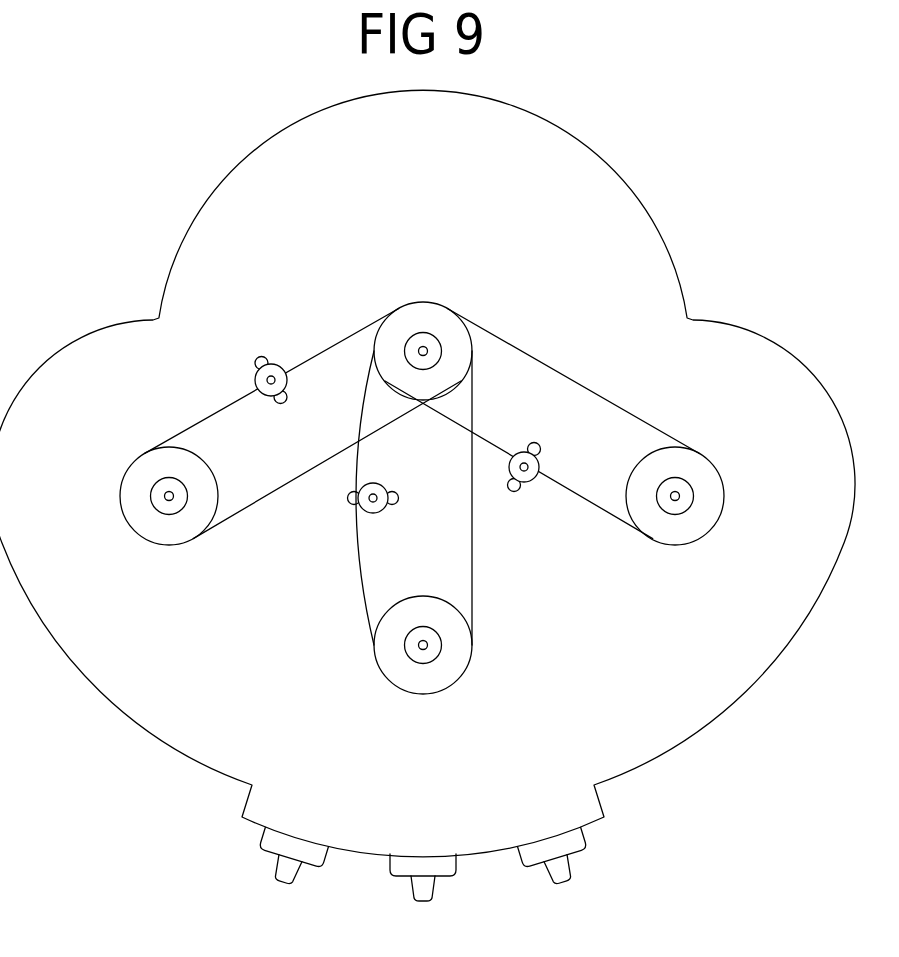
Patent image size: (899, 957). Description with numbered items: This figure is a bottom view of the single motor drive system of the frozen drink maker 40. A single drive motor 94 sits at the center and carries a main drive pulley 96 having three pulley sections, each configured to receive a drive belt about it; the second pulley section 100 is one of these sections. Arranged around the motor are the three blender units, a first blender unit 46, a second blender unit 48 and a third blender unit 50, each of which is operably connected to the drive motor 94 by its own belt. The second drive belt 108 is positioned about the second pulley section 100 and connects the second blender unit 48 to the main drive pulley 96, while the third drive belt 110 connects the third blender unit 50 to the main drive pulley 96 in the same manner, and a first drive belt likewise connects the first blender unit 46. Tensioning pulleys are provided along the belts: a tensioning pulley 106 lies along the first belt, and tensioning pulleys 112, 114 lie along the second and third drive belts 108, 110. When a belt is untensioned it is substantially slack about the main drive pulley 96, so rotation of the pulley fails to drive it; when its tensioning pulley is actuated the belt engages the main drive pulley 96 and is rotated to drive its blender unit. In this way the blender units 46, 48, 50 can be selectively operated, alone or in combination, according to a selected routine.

The frozen drink maker 40 is at (601, 159).
The first blender unit 46 is at (723, 478).
The second blender unit 48 is at (454, 683).
The third blender unit 50 is at (121, 500).
The drive motor 94 is at (438, 302).
The main drive pulley 96 is at (396, 330).
The second pulley section 100 is at (631, 410).
The tensioning pulley 106 is at (528, 482).
The second drive belt 108 is at (472, 575).
The third drive belt 110 is at (175, 436).
The tensioning pulley 112 is at (371, 507).
The tensioning pulley 114 is at (254, 384).